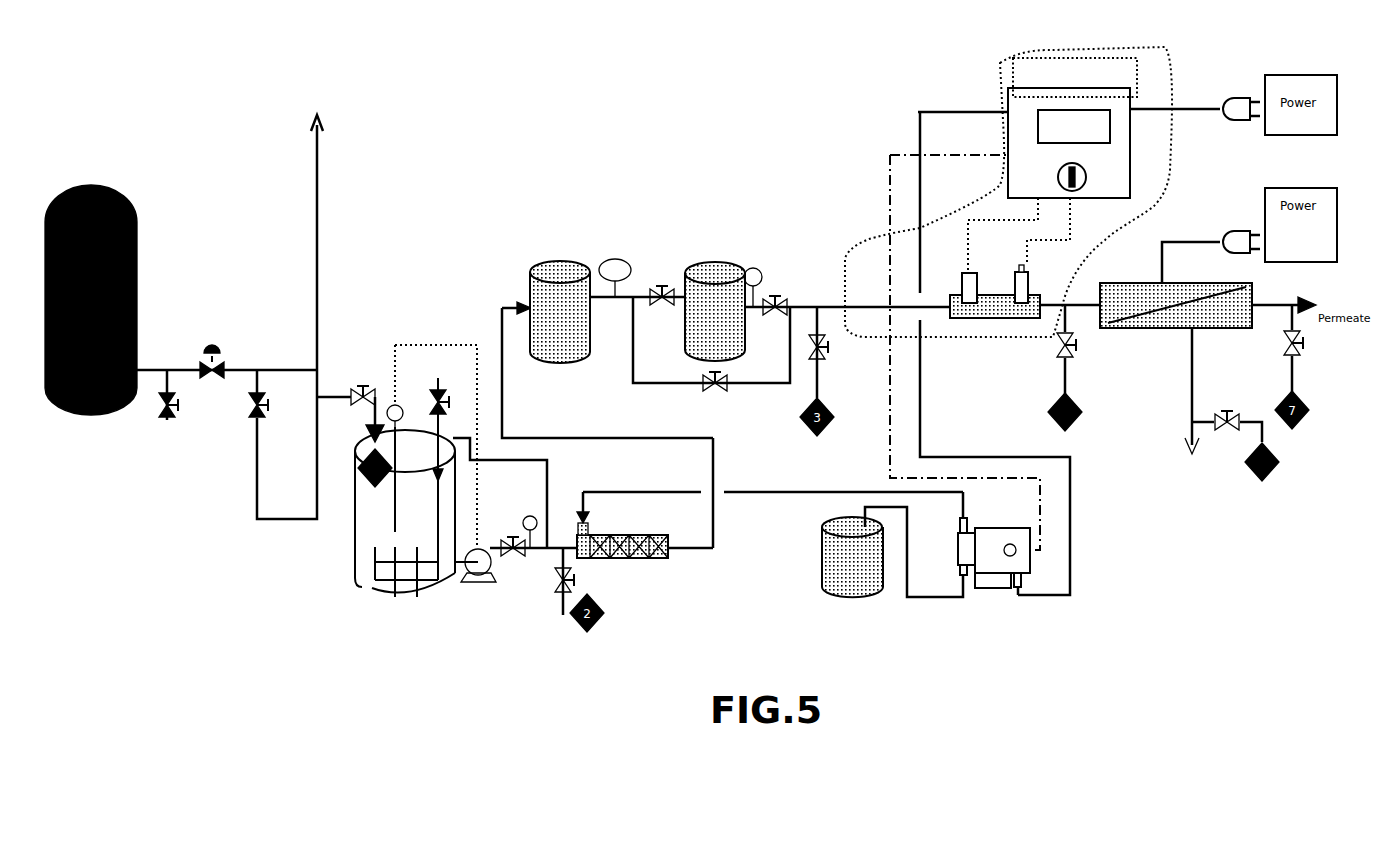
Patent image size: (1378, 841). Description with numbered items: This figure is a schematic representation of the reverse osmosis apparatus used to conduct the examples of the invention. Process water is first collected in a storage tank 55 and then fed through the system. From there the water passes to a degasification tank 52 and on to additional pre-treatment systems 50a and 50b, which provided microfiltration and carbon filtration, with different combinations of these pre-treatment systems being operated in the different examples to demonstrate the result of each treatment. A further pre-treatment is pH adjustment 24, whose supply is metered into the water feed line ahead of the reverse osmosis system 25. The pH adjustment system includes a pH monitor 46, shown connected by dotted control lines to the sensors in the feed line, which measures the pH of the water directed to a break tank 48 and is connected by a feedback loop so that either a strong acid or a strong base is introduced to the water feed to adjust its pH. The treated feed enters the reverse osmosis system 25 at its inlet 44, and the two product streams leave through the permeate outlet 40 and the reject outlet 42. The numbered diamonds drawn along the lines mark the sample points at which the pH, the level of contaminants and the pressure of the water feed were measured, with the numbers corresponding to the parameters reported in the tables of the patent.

The storage tank 55 is at (137, 262).
The degasification tank 52 is at (358, 588).
The pre-treatment system 50a is at (558, 262).
The pre-treatment system 50b is at (713, 262).
The pH monitor 46 is at (1069, 92).
The break tank 48 is at (990, 318).
The inlet 44 is at (1073, 303).
The permeate outlet 40 is at (1202, 323).
The reverse osmosis system 25 is at (1125, 329).
The reject outlet 42 is at (1195, 361).
The pH adjustment 24 is at (908, 531).